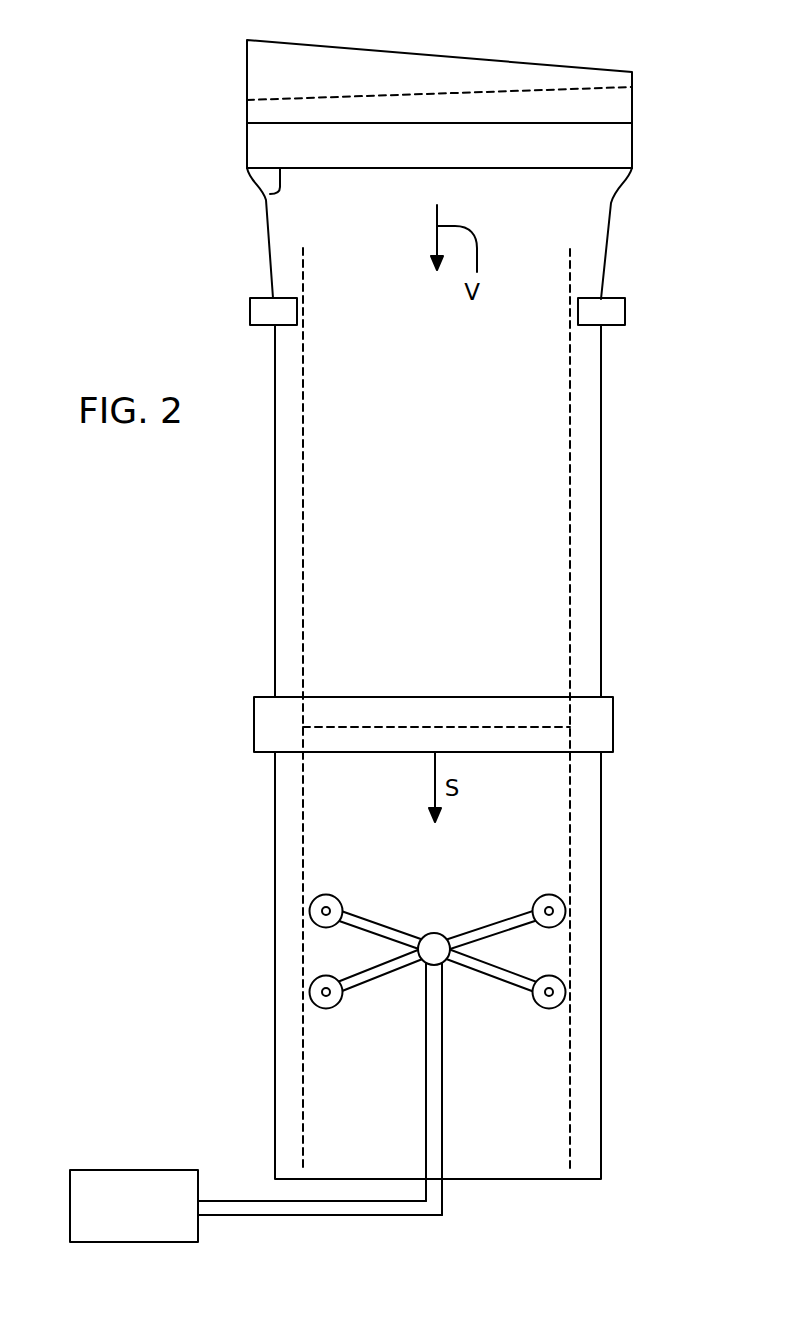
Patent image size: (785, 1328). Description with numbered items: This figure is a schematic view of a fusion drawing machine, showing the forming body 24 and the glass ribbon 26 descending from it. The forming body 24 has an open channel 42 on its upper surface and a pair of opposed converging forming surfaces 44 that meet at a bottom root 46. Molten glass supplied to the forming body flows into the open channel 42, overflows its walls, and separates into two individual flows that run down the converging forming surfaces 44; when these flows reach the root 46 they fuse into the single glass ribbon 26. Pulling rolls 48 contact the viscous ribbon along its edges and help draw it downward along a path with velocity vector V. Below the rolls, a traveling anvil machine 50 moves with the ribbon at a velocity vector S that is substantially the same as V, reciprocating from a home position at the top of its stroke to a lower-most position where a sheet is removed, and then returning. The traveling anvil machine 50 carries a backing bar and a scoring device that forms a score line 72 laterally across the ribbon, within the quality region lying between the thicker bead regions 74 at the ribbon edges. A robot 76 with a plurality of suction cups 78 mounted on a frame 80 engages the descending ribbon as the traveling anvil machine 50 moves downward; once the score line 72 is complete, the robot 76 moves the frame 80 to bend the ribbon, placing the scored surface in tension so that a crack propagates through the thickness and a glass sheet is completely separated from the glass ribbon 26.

The forming body 24 is at (632, 143).
The glass ribbon 26 is at (522, 1161).
The open channel 42 is at (505, 88).
The converging forming surfaces 44 is at (263, 140).
The root 46 is at (270, 194).
The pulling rolls 48 is at (285, 298).
The traveling anvil machine 50 is at (253, 731).
The score line 72 is at (343, 727).
The bead regions 74 is at (287, 586).
The robot 76 is at (372, 1032).
The suction cups 78 is at (328, 895).
The frame 80 is at (382, 922).